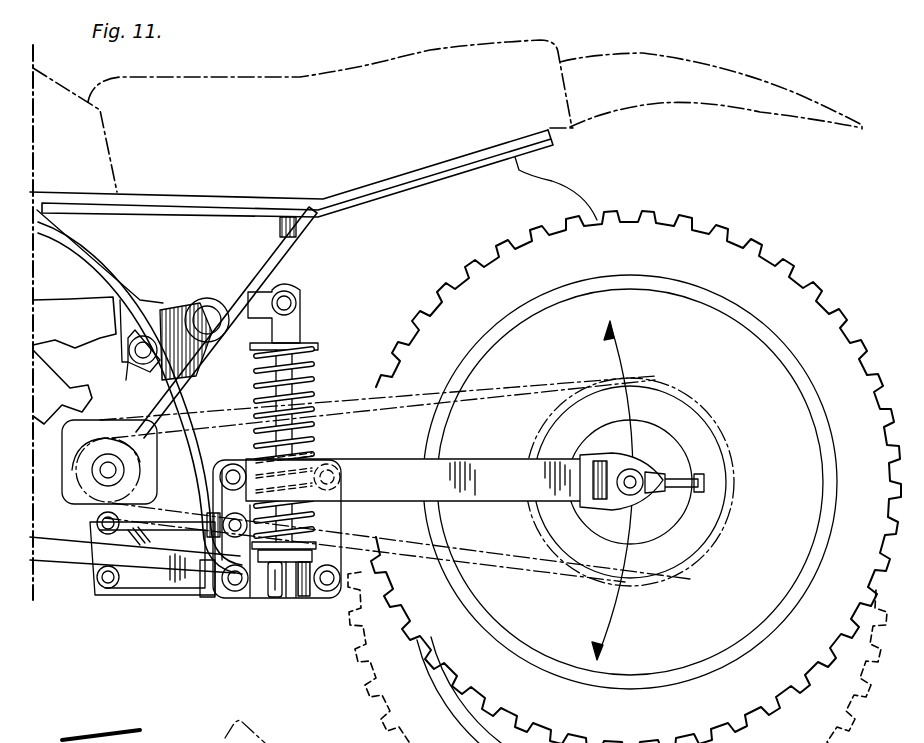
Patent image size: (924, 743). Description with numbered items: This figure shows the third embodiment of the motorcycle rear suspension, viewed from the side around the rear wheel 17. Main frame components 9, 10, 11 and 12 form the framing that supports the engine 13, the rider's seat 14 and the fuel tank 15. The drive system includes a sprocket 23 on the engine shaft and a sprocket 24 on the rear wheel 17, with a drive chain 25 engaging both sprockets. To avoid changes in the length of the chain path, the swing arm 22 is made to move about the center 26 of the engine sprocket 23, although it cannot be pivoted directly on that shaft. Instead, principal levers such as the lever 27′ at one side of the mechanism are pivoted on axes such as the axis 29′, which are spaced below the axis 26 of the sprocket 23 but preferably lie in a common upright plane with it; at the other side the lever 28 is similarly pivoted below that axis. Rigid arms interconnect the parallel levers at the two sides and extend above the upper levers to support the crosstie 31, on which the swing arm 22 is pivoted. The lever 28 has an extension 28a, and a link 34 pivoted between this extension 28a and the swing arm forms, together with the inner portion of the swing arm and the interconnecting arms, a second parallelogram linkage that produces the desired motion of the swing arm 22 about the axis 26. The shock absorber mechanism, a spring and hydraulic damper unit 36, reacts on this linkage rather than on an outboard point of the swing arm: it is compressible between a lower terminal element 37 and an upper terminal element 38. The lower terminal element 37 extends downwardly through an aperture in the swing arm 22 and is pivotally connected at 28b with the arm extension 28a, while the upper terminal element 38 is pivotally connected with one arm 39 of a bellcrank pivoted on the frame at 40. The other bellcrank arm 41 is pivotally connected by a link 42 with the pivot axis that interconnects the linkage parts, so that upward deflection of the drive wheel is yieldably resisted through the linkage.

The main frame component 9 is at (68, 560).
The main frame component 10 is at (82, 262).
The main frame component 11 is at (207, 193).
The main frame component 12 is at (298, 240).
The engine 13 is at (58, 332).
The rider's seat 14 is at (400, 55).
The fuel tank 15 is at (60, 75).
The rear wheel 17 is at (738, 245).
The swing arm 22 is at (488, 494).
The sprocket 23 is at (107, 466).
The sprocket 24 is at (548, 428).
The drive chain 25 is at (538, 390).
The center of the engine sprocket 26 is at (112, 472).
The principal lever 27′ is at (148, 596).
The principal lever 28 is at (202, 598).
The extension of the arm 28a is at (300, 598).
The pivotal connection 28b is at (284, 598).
The pivot axis 29′ is at (100, 588).
The crosstie 31 is at (234, 462).
The link 34 is at (340, 523).
The spring and hydraulic damper unit 36 is at (318, 375).
The lower terminal element 37 is at (306, 594).
The upper terminal element 38 is at (310, 345).
The bellcrank arm 39 is at (285, 285).
The bellcrank pivot 40 is at (204, 300).
The bellcrank arm 41 is at (176, 304).
The link 42 is at (158, 388).